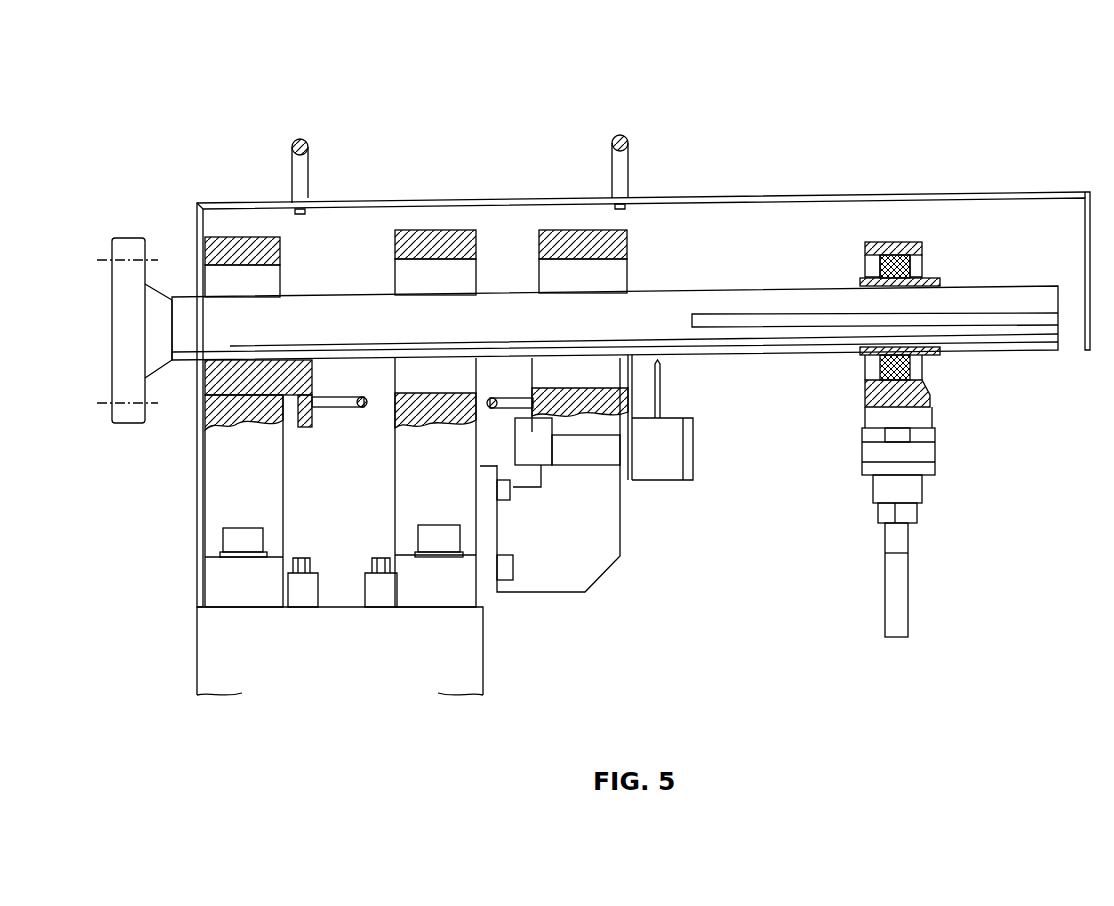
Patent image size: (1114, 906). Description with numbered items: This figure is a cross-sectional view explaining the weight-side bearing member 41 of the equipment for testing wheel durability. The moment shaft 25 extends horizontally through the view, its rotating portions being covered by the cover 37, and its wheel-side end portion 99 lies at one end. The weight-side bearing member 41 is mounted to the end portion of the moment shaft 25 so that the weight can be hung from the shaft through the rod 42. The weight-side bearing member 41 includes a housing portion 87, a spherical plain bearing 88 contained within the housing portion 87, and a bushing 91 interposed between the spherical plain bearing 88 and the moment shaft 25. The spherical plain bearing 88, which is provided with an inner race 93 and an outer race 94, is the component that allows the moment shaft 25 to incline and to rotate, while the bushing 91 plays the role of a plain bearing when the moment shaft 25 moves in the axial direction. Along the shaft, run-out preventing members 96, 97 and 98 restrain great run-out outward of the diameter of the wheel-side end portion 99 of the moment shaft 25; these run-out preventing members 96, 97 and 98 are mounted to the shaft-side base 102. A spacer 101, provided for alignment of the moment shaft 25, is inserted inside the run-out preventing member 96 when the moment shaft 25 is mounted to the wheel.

The moment shaft 25 is at (345, 297).
The cover 37 is at (975, 192).
The weight-side bearing member 41 is at (903, 167).
The rod 42 is at (908, 592).
The housing portion 87 is at (865, 250).
The spherical plain bearing 88 is at (925, 267).
The bushing 91 is at (890, 242).
The inner race 93 is at (910, 368).
The outer race 94 is at (930, 396).
The run-out preventing member 96 is at (245, 237).
The run-out preventing member 97 is at (425, 230).
The run-out preventing member 98 is at (582, 230).
The wheel-side end portion 99 is at (131, 238).
The spacer 101 is at (310, 427).
The shaft-side base 102 is at (485, 663).